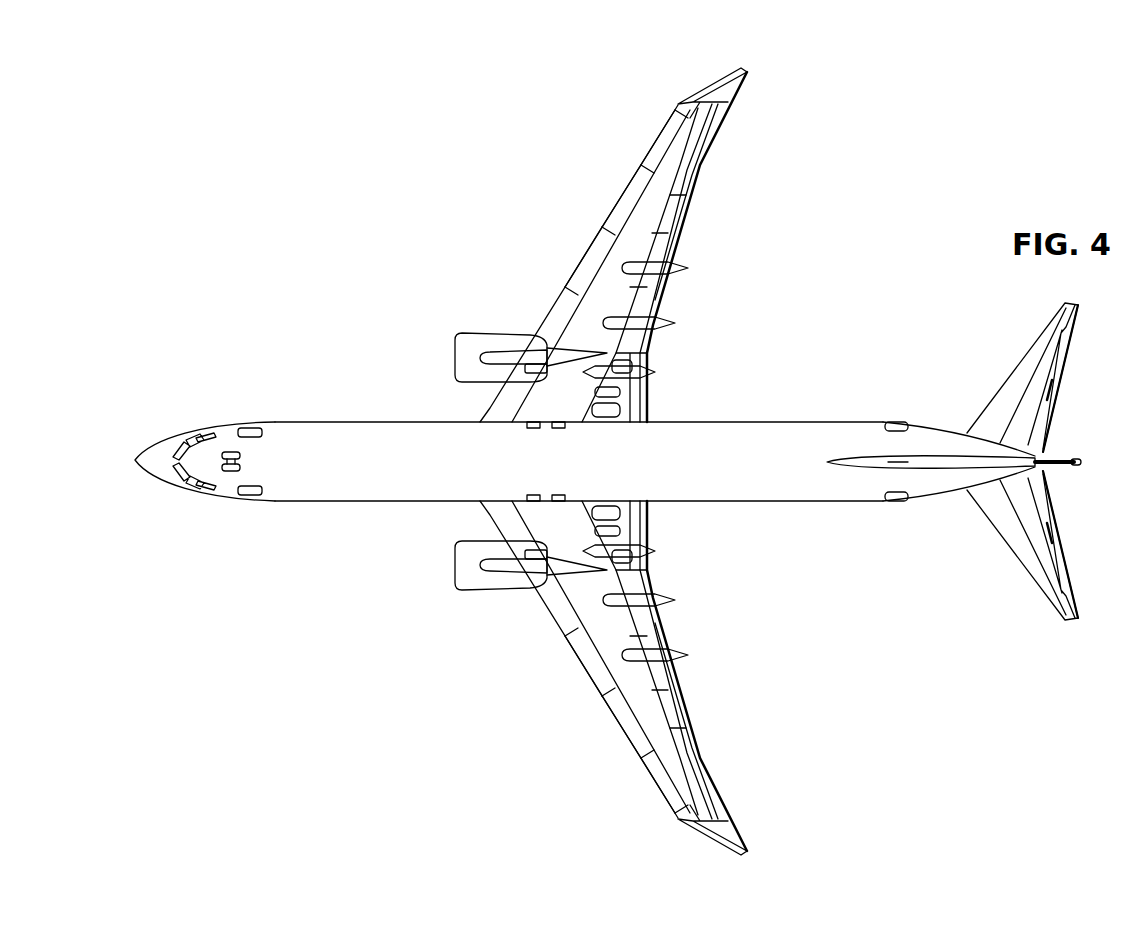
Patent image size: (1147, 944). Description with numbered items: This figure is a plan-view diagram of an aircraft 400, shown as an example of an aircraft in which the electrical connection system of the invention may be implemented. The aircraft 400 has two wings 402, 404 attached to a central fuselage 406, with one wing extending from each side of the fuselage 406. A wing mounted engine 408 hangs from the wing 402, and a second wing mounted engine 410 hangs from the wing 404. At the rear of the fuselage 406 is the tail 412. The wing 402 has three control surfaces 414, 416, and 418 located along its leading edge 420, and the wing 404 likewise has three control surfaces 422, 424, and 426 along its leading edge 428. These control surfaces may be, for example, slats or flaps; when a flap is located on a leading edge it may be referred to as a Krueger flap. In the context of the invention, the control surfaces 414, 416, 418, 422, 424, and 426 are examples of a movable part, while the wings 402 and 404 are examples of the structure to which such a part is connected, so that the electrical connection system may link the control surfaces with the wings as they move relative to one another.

The aircraft 400 is at (322, 201).
The wing 402 is at (705, 174).
The wing 404 is at (705, 749).
The fuselage 406 is at (321, 430).
The wing mounted engine 408 is at (456, 357).
The wing mounted engine 410 is at (456, 572).
The tail 412 is at (1020, 380).
The control surface 414 is at (668, 133).
The control surface 416 is at (633, 195).
The control surface 418 is at (593, 266).
The leading edge 420 is at (713, 88).
The control surface 422 is at (593, 656).
The control surface 424 is at (633, 728).
The control surface 426 is at (668, 790).
The leading edge 428 is at (713, 835).